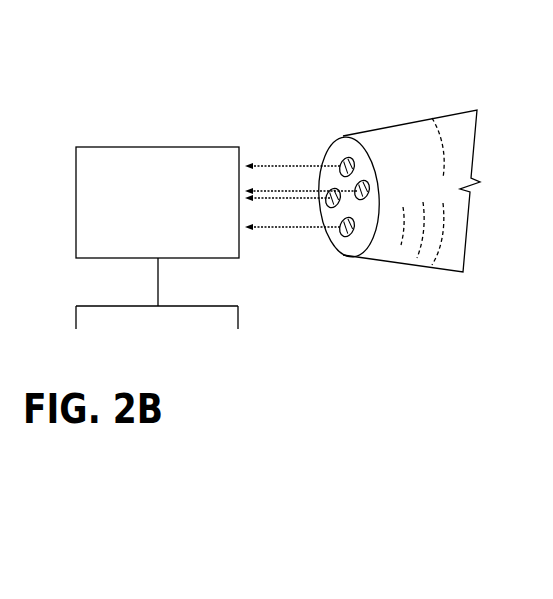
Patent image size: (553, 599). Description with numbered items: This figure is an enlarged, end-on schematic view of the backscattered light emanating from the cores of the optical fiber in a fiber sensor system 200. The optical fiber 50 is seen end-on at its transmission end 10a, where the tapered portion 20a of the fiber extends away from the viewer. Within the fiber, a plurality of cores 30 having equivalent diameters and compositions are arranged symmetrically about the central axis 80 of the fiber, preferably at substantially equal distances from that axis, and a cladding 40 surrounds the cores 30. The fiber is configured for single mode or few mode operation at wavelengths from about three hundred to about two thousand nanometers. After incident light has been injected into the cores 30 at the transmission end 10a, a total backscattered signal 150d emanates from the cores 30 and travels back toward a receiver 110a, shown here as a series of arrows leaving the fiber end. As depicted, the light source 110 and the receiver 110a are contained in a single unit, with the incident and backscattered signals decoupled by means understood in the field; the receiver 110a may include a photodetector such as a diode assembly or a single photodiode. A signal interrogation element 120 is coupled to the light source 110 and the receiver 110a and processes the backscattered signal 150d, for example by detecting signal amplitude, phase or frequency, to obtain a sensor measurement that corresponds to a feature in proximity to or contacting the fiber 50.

The fiber sensor system 200 is at (221, 100).
The light source 110 is at (157, 202).
The receiver 110a is at (174, 181).
The signal interrogation element 120 is at (137, 338).
The total backscattered signal 150d is at (290, 163).
The tapered portion 20a is at (436, 80).
The optical fiber 50 is at (459, 110).
The transmission end 10a is at (337, 122).
The cores 30 is at (374, 200).
The cladding 40 is at (347, 250).
The central axis 80 is at (374, 200).